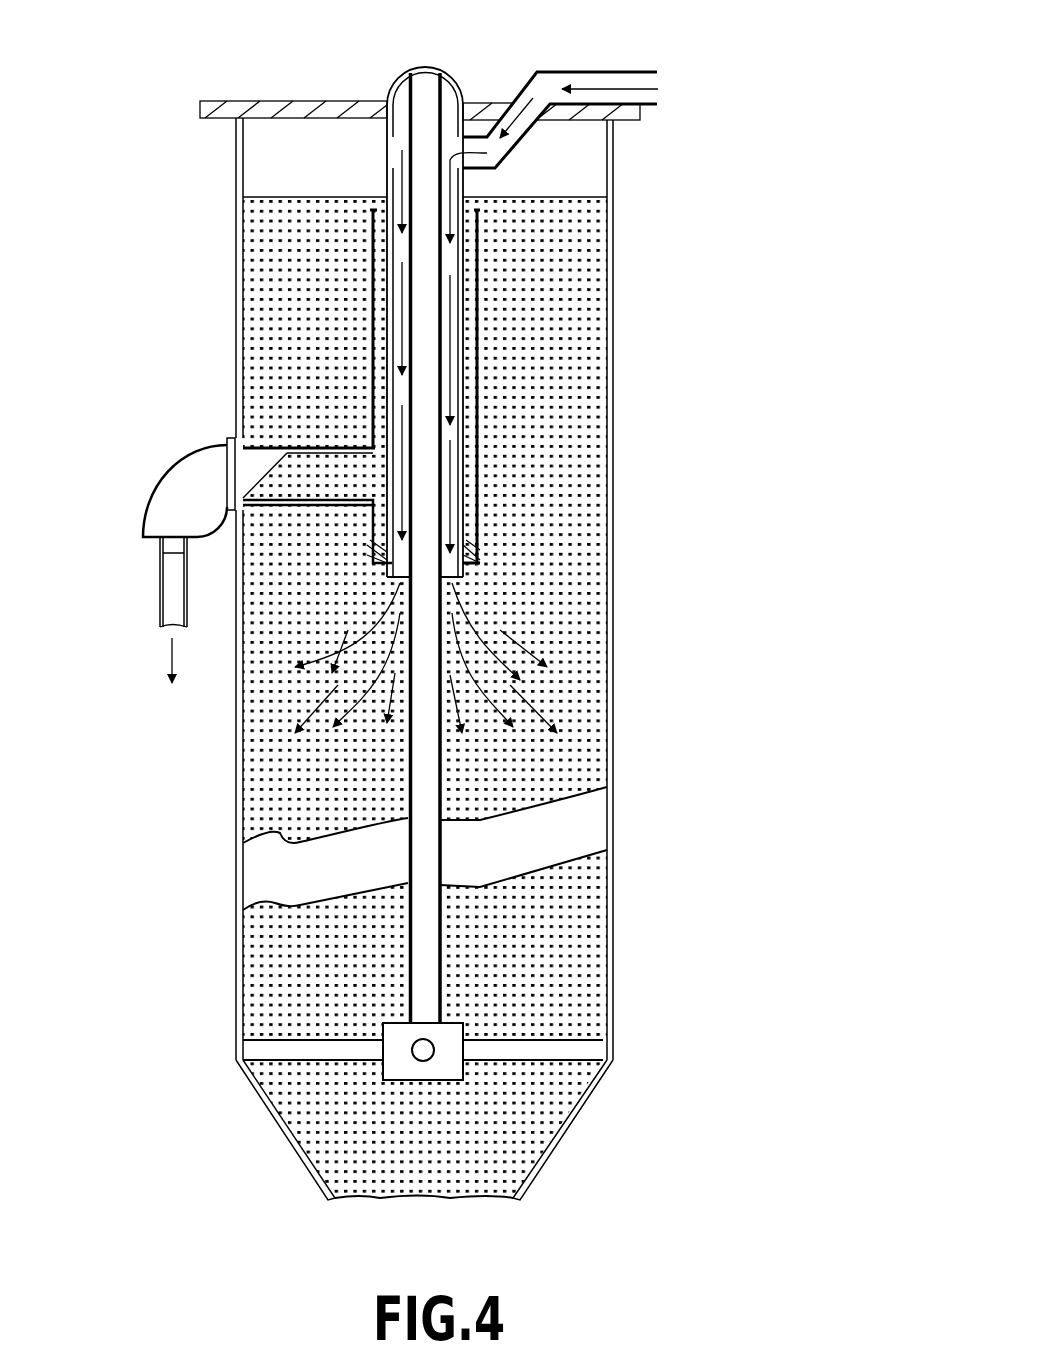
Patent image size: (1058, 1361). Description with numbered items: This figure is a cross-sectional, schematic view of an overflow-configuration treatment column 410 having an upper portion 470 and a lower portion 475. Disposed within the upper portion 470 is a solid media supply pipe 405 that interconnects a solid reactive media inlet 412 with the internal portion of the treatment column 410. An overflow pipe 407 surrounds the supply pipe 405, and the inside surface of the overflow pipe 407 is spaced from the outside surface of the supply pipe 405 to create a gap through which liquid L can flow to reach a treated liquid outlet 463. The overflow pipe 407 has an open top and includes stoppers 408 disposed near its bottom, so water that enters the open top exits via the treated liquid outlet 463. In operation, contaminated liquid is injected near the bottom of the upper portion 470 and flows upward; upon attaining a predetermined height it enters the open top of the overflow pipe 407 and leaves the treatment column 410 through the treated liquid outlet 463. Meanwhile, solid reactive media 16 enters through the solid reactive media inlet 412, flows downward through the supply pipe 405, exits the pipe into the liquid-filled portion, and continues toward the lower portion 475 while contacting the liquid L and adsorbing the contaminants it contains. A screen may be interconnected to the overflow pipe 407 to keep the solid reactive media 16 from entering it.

The solid reactive media inlet 412 is at (633, 92).
The solid reactive media 16 is at (658, 89).
The treatment column 410 is at (800, 200).
The solid media supply pipe 405 is at (388, 182).
The overflow pipe 407 is at (370, 305).
The upper portion 470 is at (612, 450).
The stoppers 408 is at (465, 550).
The treated liquid outlet 463 is at (160, 602).
The liquid L is at (612, 632).
The lower portion 475 is at (582, 1107).